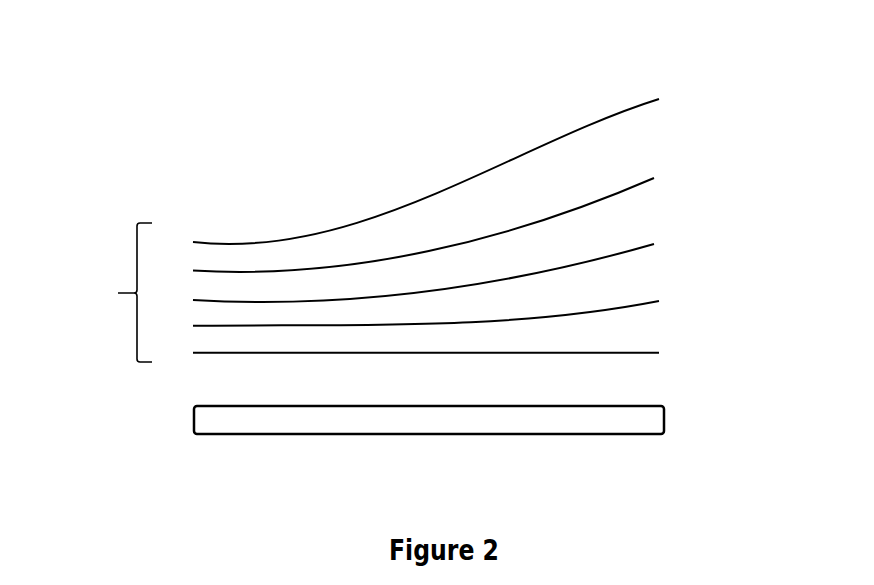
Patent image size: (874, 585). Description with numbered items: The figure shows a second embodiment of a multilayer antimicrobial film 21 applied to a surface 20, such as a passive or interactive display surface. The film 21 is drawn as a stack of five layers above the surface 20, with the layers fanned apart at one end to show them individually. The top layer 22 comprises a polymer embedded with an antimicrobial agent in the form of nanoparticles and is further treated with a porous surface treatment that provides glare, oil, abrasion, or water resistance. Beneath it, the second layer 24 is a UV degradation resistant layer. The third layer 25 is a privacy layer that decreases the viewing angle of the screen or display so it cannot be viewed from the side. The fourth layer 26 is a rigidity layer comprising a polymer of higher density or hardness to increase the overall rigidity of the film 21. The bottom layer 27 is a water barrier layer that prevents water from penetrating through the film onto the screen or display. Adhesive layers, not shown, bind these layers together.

The surface 20 is at (639, 421).
The multilayer antimicrobial film 21 is at (97, 280).
The top layer 22 is at (683, 100).
The second layer 24 is at (683, 178).
The third layer 25 is at (684, 251).
The fourth layer 26 is at (693, 305).
The bottom layer 27 is at (693, 358).